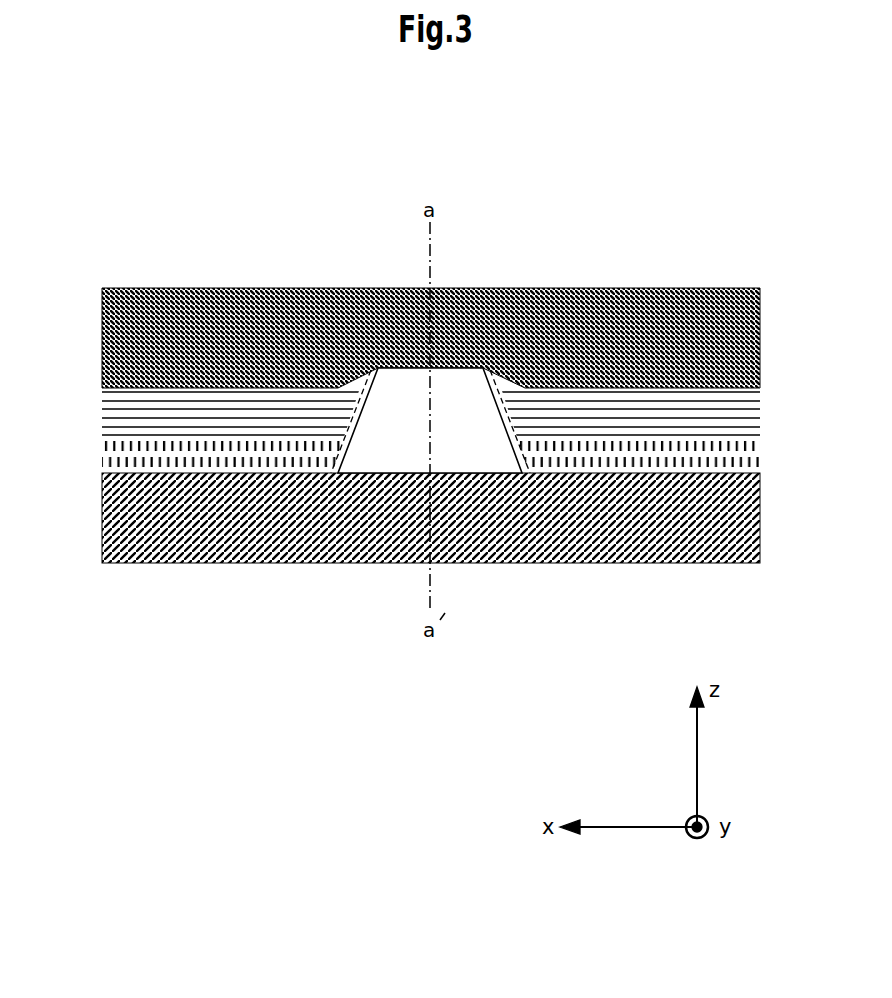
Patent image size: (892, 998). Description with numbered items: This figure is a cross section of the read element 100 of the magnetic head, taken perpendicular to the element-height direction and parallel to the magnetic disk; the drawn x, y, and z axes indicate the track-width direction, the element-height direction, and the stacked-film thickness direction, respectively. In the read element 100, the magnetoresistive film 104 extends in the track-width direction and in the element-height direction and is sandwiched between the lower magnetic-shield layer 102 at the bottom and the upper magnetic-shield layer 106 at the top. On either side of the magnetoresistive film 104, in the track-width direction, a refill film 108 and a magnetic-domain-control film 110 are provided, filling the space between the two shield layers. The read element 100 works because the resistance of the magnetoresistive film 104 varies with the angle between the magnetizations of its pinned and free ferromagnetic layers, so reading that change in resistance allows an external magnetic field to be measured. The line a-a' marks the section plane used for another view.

The read element 100 is at (709, 205).
The lower magnetic-shield layer 102 is at (613, 540).
The magnetoresistive film 104 is at (450, 387).
The upper magnetic-shield layer 106 is at (210, 322).
The refill film 108 is at (128, 452).
The magnetic-domain-control film 110 is at (738, 413).